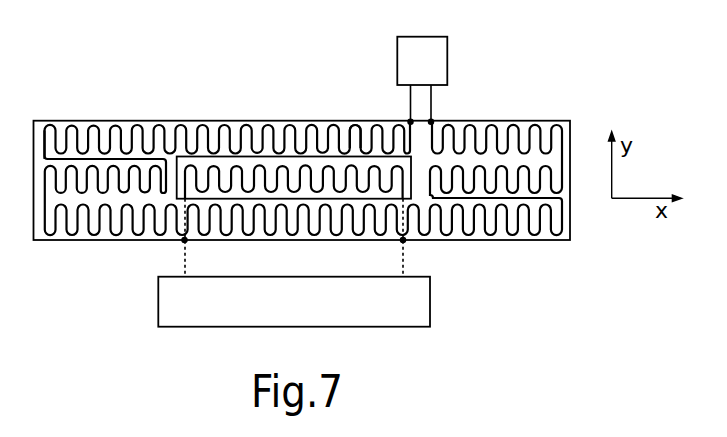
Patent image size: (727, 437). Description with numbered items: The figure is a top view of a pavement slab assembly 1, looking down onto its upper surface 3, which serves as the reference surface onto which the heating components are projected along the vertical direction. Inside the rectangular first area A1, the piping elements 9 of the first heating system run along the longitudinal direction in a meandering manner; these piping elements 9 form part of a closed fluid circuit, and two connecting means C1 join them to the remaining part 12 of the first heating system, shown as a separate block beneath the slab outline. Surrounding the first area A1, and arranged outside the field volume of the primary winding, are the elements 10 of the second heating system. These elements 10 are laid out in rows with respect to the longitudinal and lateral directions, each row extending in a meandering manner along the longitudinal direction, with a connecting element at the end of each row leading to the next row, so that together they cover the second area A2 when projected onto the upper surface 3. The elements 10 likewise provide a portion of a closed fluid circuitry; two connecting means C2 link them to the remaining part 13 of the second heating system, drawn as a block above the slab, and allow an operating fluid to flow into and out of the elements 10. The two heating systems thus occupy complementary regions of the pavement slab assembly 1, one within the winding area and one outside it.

The pavement slab assembly 1 is at (95, 240).
The upper surface 3 is at (570, 122).
The piping elements 9 is at (238, 168).
The elements of the second heating system 10 is at (138, 131).
The remaining part of the first heating system 12 is at (415, 297).
The remaining part of the second heating system 13 is at (448, 53).
The first area A1 is at (319, 170).
The second area A2 is at (360, 130).
The connecting means C1 is at (183, 242).
The connecting means C2 is at (409, 120).